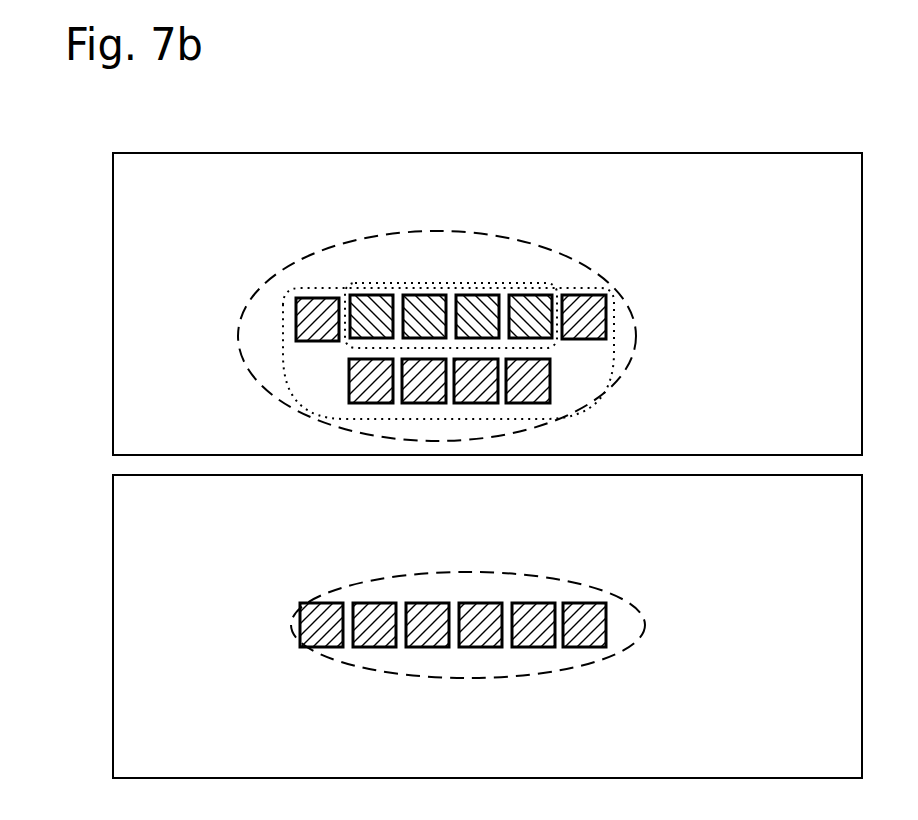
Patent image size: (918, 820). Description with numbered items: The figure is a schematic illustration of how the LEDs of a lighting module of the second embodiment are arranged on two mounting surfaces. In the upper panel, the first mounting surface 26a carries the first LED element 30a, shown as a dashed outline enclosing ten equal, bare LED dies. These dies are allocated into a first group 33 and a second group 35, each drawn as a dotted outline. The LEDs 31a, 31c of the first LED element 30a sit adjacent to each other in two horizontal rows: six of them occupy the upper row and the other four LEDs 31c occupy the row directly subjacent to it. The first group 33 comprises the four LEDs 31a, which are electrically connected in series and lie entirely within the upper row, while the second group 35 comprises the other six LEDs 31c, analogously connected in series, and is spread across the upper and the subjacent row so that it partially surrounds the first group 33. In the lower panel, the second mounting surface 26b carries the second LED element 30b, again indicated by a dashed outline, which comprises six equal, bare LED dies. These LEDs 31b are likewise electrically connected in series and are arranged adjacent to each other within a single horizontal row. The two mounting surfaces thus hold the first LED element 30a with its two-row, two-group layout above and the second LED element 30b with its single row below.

The first mounting surface 26a is at (100, 277).
The second mounting surface 26b is at (100, 628).
The first LED element 30a is at (635, 338).
The second LED element 30b is at (637, 612).
The LEDs of the first group 31a is at (475, 295).
The LEDs of the second LED element 31b is at (410, 606).
The LEDs of the second group 31c is at (425, 375).
The first group 33 is at (510, 275).
The second group 35 is at (283, 313).